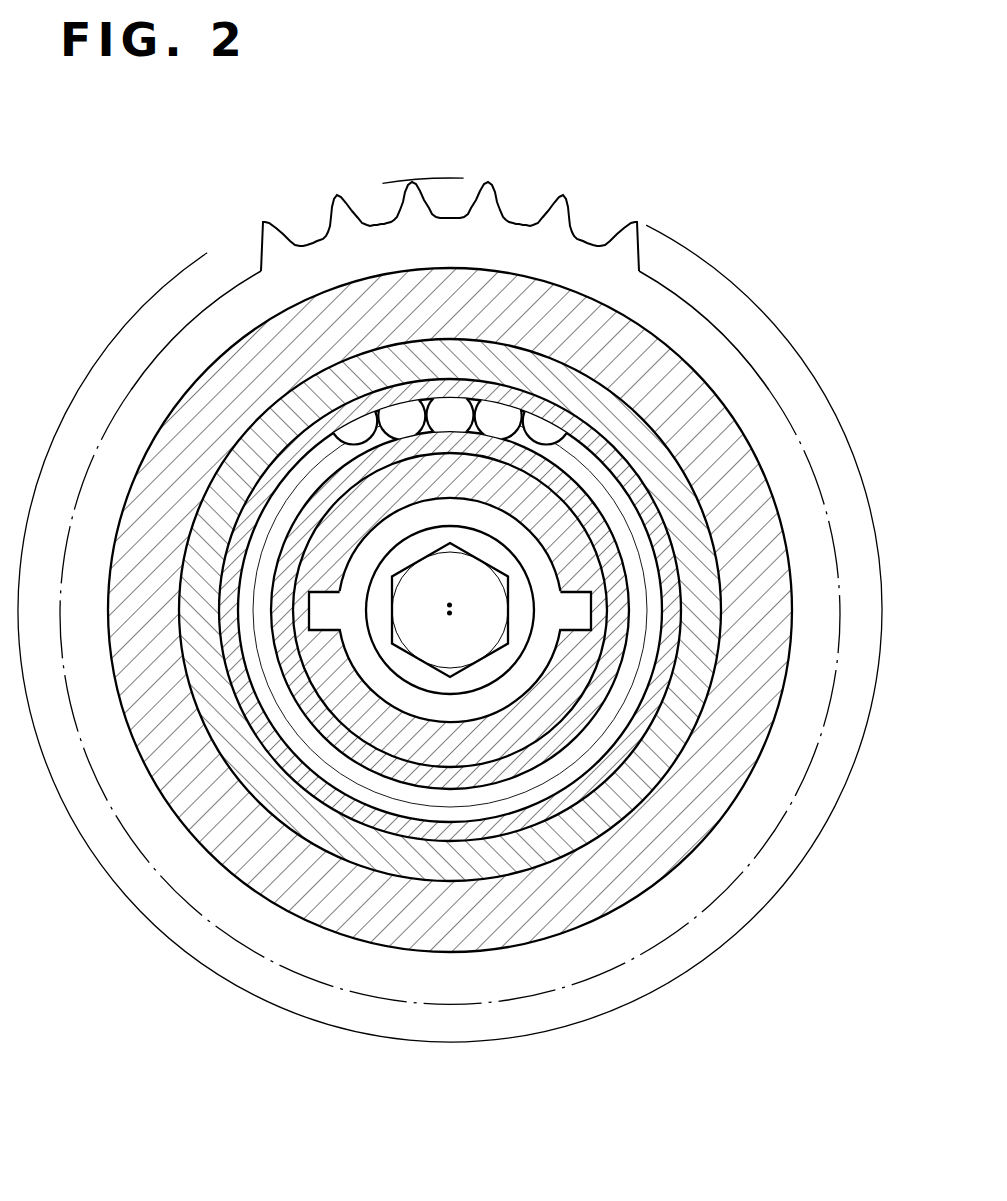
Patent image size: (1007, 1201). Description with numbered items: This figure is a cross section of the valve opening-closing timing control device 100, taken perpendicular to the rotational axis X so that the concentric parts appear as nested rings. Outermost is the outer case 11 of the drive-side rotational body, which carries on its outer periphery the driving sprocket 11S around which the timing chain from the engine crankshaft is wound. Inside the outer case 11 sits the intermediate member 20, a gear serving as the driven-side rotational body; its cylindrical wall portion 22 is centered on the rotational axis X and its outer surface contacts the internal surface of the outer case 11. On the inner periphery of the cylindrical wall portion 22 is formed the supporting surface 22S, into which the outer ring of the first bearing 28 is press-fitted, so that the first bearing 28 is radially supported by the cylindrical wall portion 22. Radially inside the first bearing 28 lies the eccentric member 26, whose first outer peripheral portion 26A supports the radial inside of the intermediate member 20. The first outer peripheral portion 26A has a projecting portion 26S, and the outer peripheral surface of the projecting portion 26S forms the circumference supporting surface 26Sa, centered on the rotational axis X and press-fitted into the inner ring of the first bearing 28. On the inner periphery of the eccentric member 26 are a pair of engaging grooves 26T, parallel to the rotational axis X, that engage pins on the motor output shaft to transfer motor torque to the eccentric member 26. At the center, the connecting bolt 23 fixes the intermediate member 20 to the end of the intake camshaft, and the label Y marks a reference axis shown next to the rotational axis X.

The valve opening-closing timing control device 100 is at (160, 203).
The outer case 11 is at (265, 905).
The driving sprocket 11S is at (487, 183).
The intermediate member 20 is at (640, 810).
The cylindrical wall portion 22 is at (330, 385).
The supporting surface 22S is at (455, 818).
The first bearing 28 is at (446, 377).
The eccentric member 26 is at (512, 635).
The first outer peripheral portion 26A is at (593, 690).
The projecting portion 26S is at (450, 685).
The circumference supporting surface 26Sa is at (490, 768).
The engaging grooves 26T is at (318, 598).
The connecting bolt 23 is at (450, 674).
The rotational axis X is at (449, 613).
The center axis Y is at (449, 605).